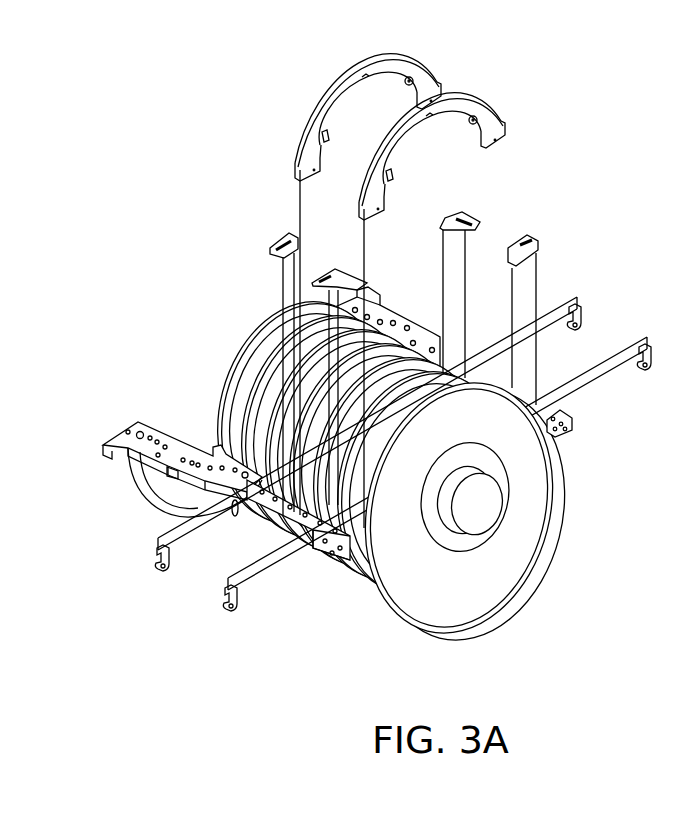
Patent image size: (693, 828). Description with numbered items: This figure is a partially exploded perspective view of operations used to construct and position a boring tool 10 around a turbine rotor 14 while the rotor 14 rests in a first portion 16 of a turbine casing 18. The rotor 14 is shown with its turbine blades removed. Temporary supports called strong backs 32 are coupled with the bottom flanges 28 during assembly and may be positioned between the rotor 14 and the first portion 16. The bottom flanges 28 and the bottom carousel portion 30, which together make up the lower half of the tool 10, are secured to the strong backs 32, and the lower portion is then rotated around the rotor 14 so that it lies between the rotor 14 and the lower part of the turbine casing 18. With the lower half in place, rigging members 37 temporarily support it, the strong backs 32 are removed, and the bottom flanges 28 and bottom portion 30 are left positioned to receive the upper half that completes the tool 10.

The tool 10 is at (563, 213).
The rotor 14 is at (238, 372).
The first portion 16 is at (158, 476).
The turbine casing 18 is at (167, 465).
The bottom flanges 28 is at (281, 551).
The bottom portion 30 is at (300, 523).
The strong backs 32 is at (410, 63).
The rigging members 37 is at (458, 212).